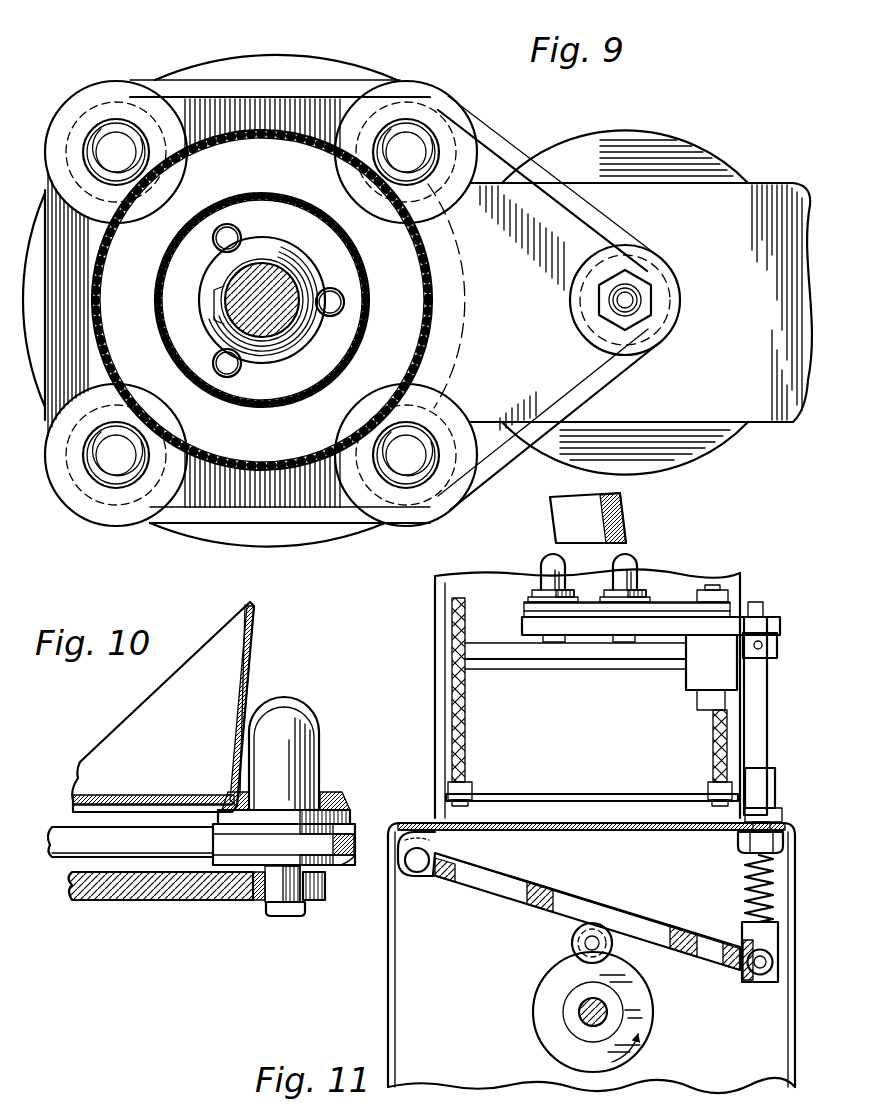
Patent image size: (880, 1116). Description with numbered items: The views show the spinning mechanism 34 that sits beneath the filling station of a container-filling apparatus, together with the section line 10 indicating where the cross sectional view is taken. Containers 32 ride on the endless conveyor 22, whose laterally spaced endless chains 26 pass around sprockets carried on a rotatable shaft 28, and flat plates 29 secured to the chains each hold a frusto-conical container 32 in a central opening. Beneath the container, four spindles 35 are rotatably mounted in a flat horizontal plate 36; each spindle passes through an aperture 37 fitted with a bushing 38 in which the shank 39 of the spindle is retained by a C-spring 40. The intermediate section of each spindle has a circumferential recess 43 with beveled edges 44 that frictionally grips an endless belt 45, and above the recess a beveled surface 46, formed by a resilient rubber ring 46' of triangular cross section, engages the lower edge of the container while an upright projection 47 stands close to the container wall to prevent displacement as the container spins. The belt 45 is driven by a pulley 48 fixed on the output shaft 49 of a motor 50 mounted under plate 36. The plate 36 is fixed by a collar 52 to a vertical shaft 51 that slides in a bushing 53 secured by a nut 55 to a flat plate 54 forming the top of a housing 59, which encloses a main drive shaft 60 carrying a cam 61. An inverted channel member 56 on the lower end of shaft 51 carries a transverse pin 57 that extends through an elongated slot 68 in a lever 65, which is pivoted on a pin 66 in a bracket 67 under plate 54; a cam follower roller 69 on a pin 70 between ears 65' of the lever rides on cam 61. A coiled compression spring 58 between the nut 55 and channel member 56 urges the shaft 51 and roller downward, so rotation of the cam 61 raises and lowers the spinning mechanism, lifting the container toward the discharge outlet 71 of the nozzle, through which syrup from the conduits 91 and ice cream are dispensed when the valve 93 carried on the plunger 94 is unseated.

In FIG. 9, the section line 10 is at (340, 395).
In FIG. 11, the endless conveyor 22 is at (450, 705).
In FIG. 11, the endless chains 26 is at (452, 625).
In FIG. 11, the rotatable shaft 28 is at (503, 668).
In FIG. 11, the flat plates 29 is at (510, 797).
In FIG. 9, the container 32 is at (406, 262).
In FIG. 10, the container 32 is at (248, 653).
In FIG. 11, the container 32 is at (626, 521).
In FIG. 9, the spinning mechanism 34 is at (322, 130).
In FIG. 10, the spinning mechanism 34 is at (326, 683).
In FIG. 11, the spinning mechanism 34 is at (640, 560).
In FIG. 9, the spindles 35 is at (128, 122).
In FIG. 10, the spindles 35 is at (322, 746).
In FIG. 11, the spindles 35 is at (611, 568).
In FIG. 9, the flat horizontally disposed plate 36 is at (288, 60).
In FIG. 10, the flat horizontally disposed plate 36 is at (87, 893).
In FIG. 11, the flat horizontally disposed plate 36 is at (541, 628).
In FIG. 10, the aperture 37 is at (263, 908).
In FIG. 10, the bushing 38 is at (320, 890).
In FIG. 10, the shank 39 is at (280, 910).
In FIG. 11, the shank 39 is at (627, 640).
In FIG. 10, the C-spring 40 is at (307, 908).
In FIG. 10, the circumferential recess 43 is at (227, 850).
In FIG. 10, the beveled edges 44 is at (356, 843).
In FIG. 9, the endless belt 45 is at (600, 382).
In FIG. 10, the endless belt 45 is at (356, 845).
In FIG. 11, the endless belt 45 is at (613, 612).
In FIG. 9, the beveled surface 46 is at (284, 323).
In FIG. 10, the beveled surface 46 is at (345, 781).
In FIG. 11, the beveled surface 46 is at (565, 611).
In FIG. 10, the ring 46' is at (206, 782).
In FIG. 9, the upright projection 47 is at (430, 126).
In FIG. 10, the upright projection 47 is at (303, 712).
In FIG. 11, the upright projection 47 is at (546, 563).
In FIG. 9, the pulley 48 is at (573, 339).
In FIG. 11, the pulley 48 is at (695, 600).
In FIG. 9, the output shaft 49 is at (628, 296).
In FIG. 9, the motor 50 is at (720, 168).
In FIG. 11, the motor 50 is at (692, 676).
In FIG. 11, the vertical shaft 51 is at (768, 720).
In FIG. 11, the collar 52 is at (777, 640).
In FIG. 11, the bushing 53 is at (770, 789).
In FIG. 11, the flat plate 54 is at (624, 831).
In FIG. 11, the nut 55 is at (738, 844).
In FIG. 11, the inverted channel member 56 is at (742, 926).
In FIG. 11, the transverse pin 57 is at (758, 982).
In FIG. 11, the coiled compression spring 58 is at (747, 878).
In FIG. 11, the housing 59 is at (388, 985).
In FIG. 11, the main drive shaft 60 is at (577, 1013).
In FIG. 11, the cam 61 is at (652, 1031).
In FIG. 11, the lever 65 is at (586, 909).
In FIG. 11, the ears 65' is at (614, 940).
In FIG. 11, the pin 66 is at (416, 875).
In FIG. 11, the bracket 67 is at (435, 840).
In FIG. 11, the elongated slot 68 is at (750, 954).
In FIG. 11, the cam follower roller 69 is at (572, 944).
In FIG. 11, the pin 70 is at (612, 946).
In FIG. 9, the outlet 71 is at (214, 296).
In FIG. 9, the conduits 91 is at (240, 232).
In FIG. 9, the valve 93 is at (258, 362).
In FIG. 9, the plunger 94 is at (292, 275).